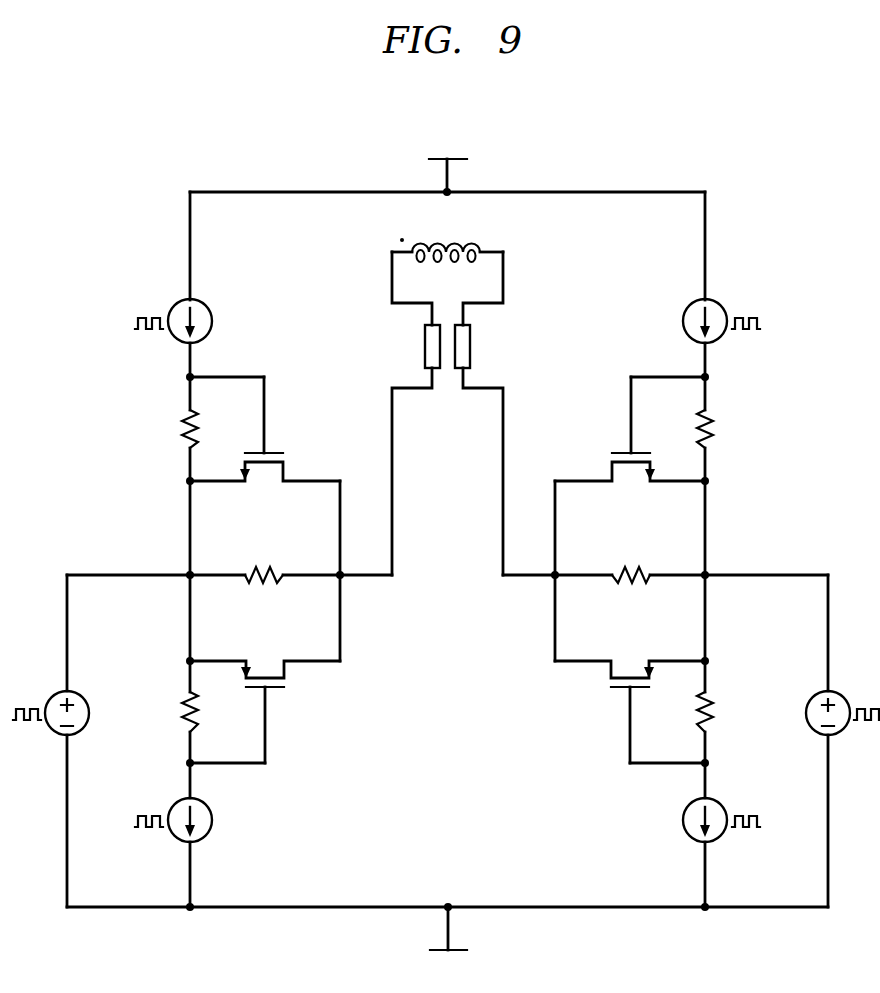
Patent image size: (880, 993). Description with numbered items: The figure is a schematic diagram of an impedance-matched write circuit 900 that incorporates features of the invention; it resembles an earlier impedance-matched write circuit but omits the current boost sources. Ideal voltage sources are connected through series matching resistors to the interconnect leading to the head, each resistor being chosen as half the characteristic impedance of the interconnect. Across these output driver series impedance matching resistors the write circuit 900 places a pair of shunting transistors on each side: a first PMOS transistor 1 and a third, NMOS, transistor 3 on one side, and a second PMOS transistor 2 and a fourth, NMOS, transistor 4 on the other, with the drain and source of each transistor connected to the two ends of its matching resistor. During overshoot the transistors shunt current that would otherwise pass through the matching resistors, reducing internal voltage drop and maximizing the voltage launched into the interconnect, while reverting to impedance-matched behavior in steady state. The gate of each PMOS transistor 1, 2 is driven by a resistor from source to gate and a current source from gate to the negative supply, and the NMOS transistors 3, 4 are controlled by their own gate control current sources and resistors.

The impedance-matched write circuit 900 is at (677, 109).
The PMOS transistor M1 1 is at (265, 694).
The PMOS transistor M2 2 is at (630, 694).
The NMOS transistor M3 3 is at (265, 448).
The NMOS transistor M4 4 is at (630, 448).